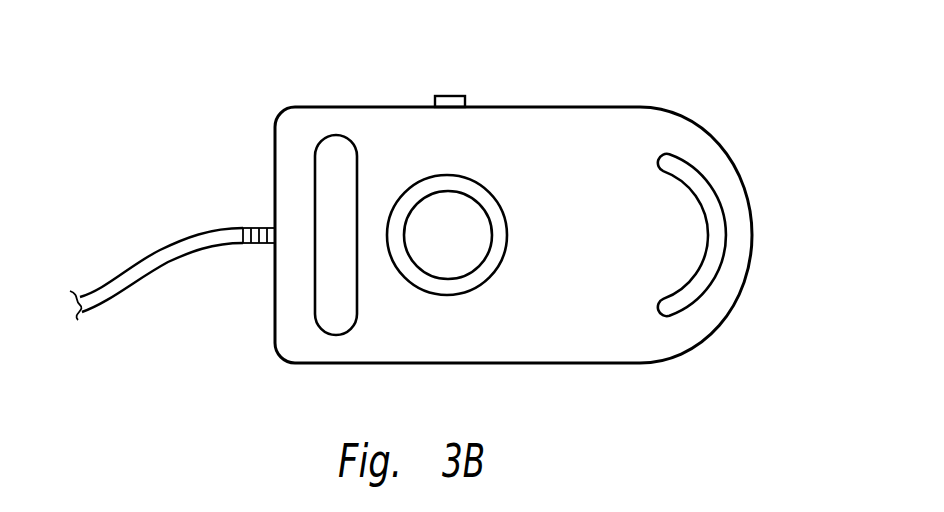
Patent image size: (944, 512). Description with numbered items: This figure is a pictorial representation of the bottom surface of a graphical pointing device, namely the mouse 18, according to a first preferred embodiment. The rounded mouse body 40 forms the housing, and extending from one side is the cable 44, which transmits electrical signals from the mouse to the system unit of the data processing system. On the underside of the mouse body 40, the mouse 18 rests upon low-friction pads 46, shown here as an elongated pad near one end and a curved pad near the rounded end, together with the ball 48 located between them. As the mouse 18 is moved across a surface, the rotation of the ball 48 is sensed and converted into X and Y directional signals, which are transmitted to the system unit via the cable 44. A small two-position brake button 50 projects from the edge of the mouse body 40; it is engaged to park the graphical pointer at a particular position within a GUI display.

The mouse 18 is at (726, 97).
The mouse body 40 is at (599, 107).
The cable 44 is at (172, 243).
The low-friction pads 46 is at (356, 319).
The ball 48 is at (481, 229).
The brake button 50 is at (460, 96).